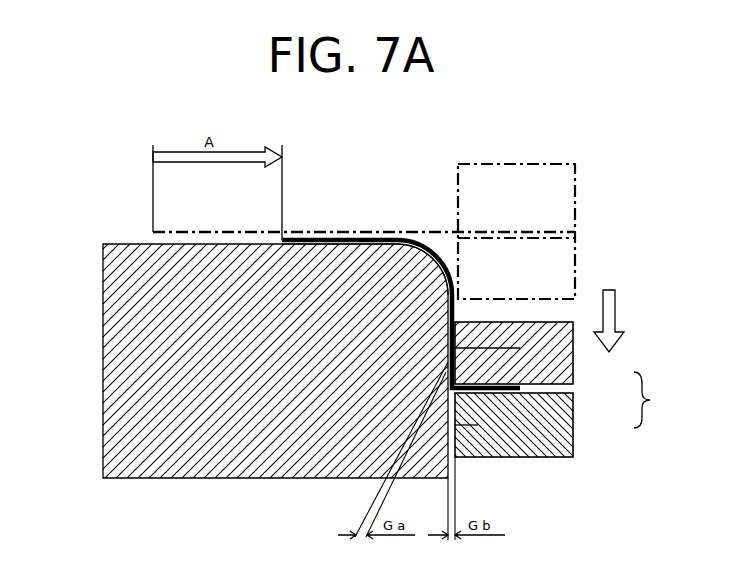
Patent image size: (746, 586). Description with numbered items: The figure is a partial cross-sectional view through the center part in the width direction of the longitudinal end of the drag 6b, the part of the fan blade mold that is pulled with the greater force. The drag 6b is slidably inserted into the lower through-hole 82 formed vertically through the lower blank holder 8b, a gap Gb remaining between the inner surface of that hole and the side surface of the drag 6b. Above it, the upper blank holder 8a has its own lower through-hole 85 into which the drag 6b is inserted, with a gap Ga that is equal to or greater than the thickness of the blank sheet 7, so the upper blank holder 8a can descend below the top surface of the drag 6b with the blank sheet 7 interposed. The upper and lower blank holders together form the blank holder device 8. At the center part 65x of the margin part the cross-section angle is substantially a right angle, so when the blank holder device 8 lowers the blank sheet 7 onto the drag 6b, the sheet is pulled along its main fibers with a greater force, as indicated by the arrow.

The drag 6b is at (104, 352).
The center part in the width direction of the margin part 65x is at (356, 275).
The blank sheet 7 is at (432, 242).
The blank holder device 8 is at (649, 400).
The upper blank holder 8a is at (565, 372).
The lower blank holder 8b is at (560, 426).
The lower through-hole 85 is at (492, 345).
The lower through-hole 82 is at (476, 425).